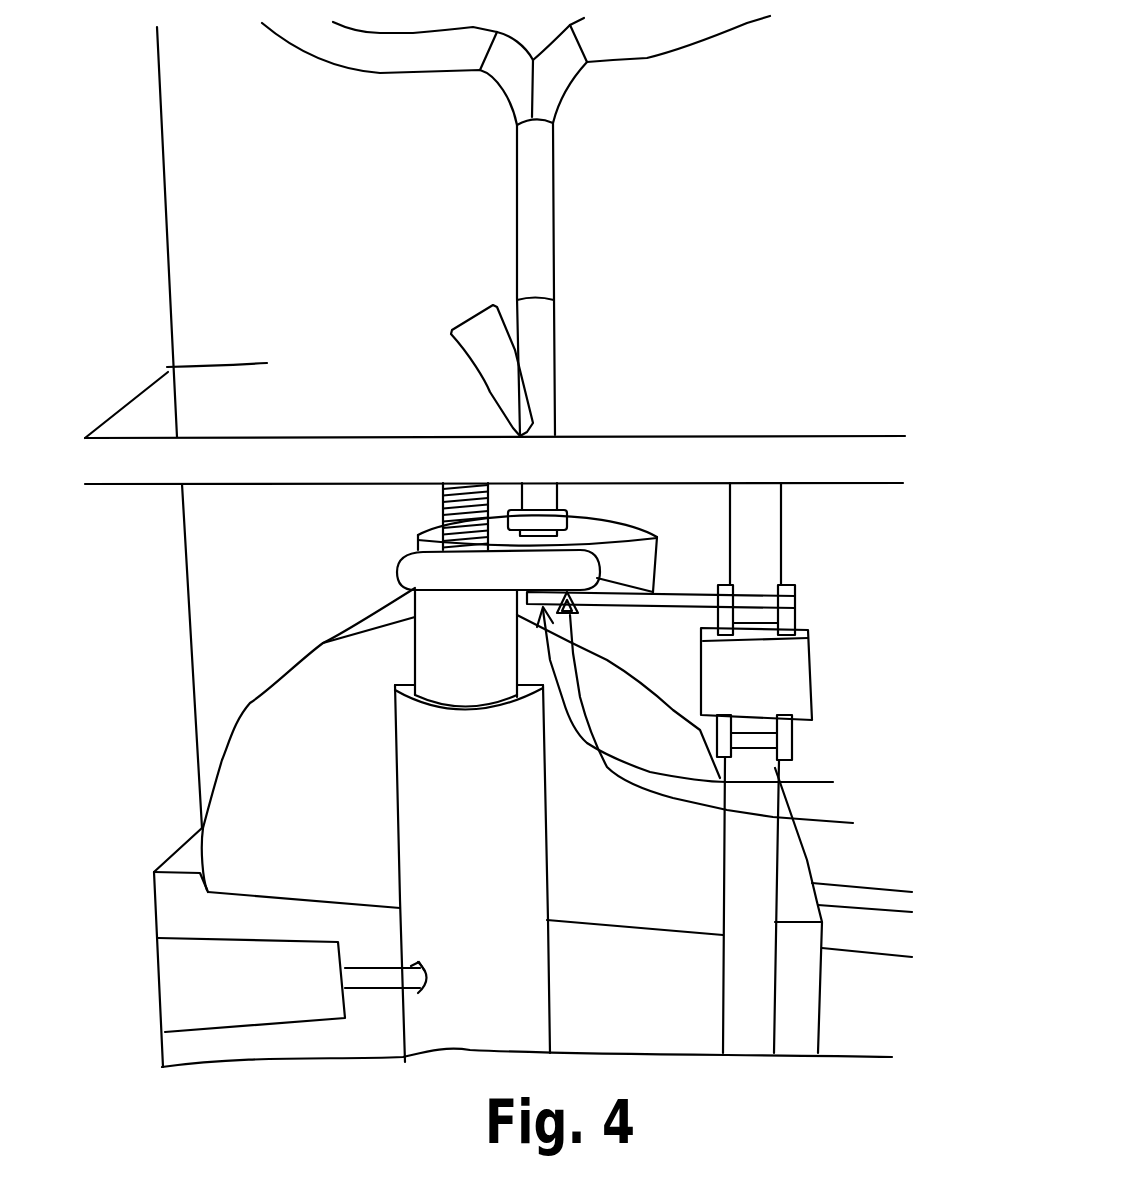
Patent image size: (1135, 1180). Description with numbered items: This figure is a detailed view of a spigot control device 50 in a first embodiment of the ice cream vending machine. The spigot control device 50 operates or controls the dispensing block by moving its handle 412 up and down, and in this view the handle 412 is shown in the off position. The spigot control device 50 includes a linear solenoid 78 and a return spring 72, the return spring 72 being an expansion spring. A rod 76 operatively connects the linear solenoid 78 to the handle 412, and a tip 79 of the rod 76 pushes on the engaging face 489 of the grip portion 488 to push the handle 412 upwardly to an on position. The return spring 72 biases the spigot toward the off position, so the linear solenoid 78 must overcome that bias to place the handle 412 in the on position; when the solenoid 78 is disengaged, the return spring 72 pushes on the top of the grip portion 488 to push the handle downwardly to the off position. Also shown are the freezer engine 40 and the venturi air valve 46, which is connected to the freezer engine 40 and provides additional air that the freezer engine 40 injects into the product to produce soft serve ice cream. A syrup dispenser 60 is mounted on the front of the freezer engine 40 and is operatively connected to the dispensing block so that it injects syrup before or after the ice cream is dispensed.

The freezer engine 40 is at (237, 685).
The venturi air valve 46 is at (557, 360).
The spigot control device 50 is at (830, 610).
The syrup dispenser 60 is at (172, 970).
The return spring 72 is at (438, 502).
The rod 76 is at (688, 593).
The linear solenoid 78 is at (817, 670).
The tip 79 is at (730, 718).
The handle 412 is at (395, 567).
The grip portion 488 is at (598, 567).
The engaging face 489 is at (720, 701).